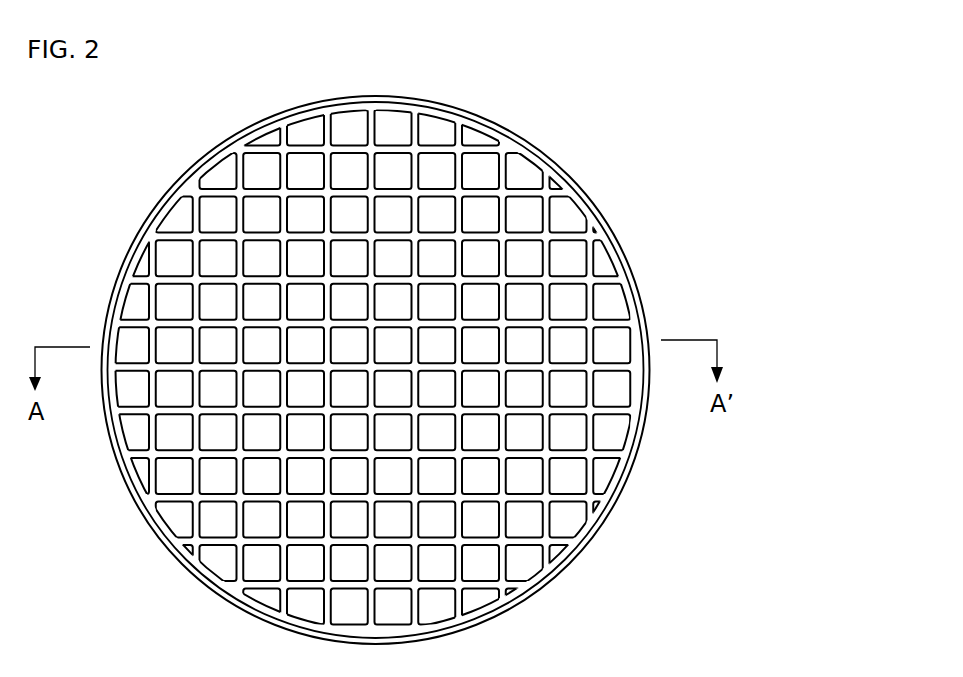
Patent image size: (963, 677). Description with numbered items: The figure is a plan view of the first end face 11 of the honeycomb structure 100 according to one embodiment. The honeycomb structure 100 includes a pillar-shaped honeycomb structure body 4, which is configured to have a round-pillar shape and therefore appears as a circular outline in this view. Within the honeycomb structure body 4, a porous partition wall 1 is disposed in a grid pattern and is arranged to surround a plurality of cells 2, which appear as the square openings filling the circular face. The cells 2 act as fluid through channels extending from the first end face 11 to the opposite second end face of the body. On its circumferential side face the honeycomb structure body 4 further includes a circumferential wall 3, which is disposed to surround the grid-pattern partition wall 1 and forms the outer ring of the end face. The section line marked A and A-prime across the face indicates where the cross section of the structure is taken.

The honeycomb structure 100 is at (708, 62).
The first end face 11 is at (178, 157).
The partition wall 1 is at (475, 190).
The cell 2 is at (522, 210).
The circumferential wall 3 is at (593, 533).
The honeycomb structure body 4 is at (652, 308).